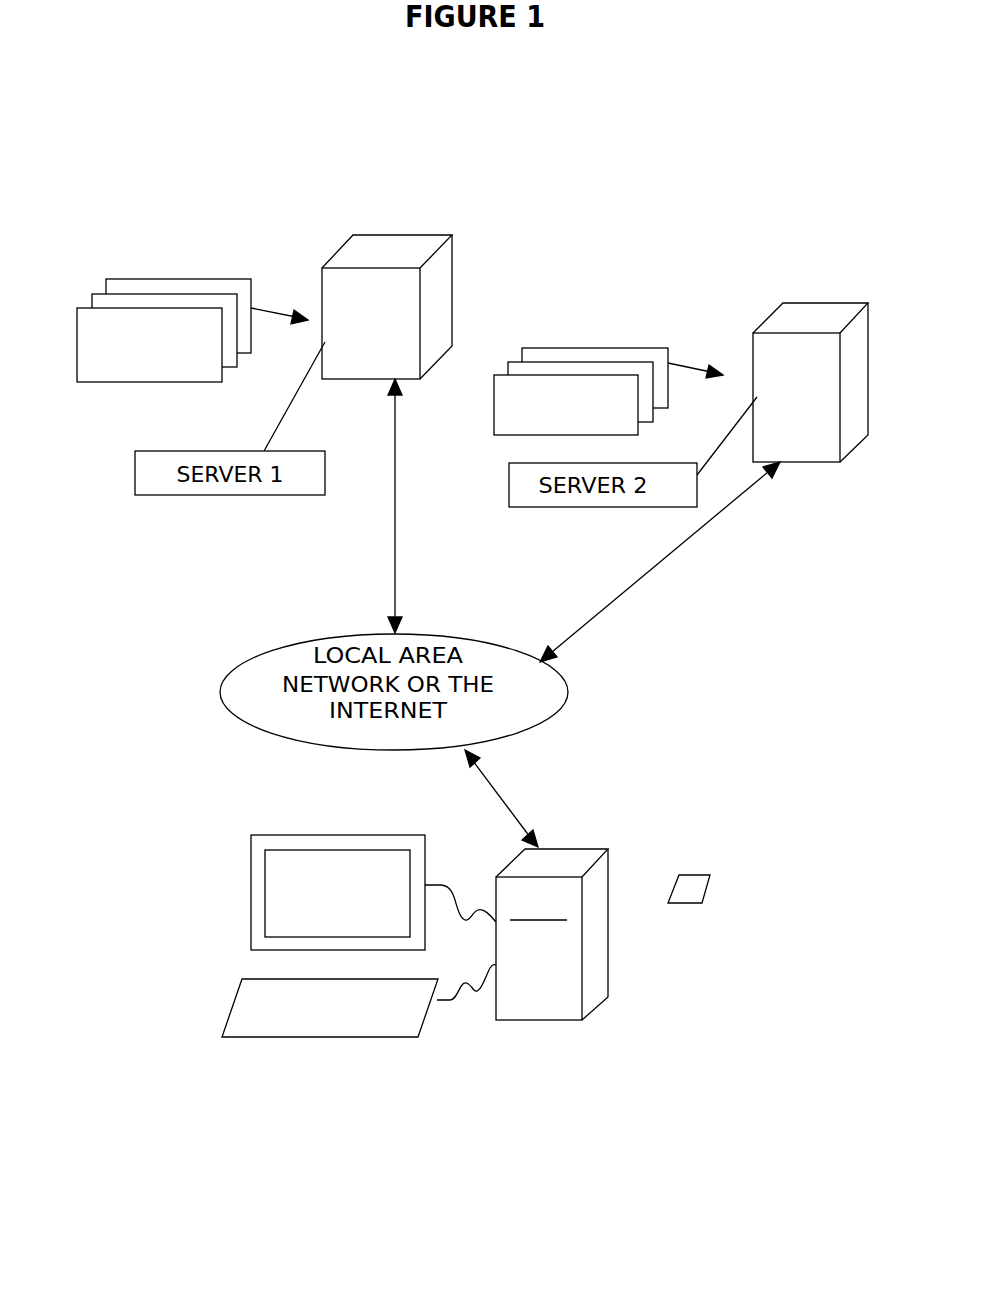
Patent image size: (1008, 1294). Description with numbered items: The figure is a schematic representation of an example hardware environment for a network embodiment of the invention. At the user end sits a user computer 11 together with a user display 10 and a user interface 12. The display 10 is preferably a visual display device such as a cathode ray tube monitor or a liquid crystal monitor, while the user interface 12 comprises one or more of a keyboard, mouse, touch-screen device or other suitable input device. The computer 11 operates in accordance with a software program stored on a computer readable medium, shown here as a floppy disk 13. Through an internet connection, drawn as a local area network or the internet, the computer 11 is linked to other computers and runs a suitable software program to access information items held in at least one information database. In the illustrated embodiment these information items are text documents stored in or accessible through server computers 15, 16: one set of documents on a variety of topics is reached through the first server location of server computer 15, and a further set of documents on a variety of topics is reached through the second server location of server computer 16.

The user display 10 is at (333, 898).
The user computer 11 is at (524, 981).
The user interface 12 is at (266, 1022).
The floppy disk 13 is at (680, 903).
The server computer 15 is at (410, 235).
The server computer 16 is at (825, 303).